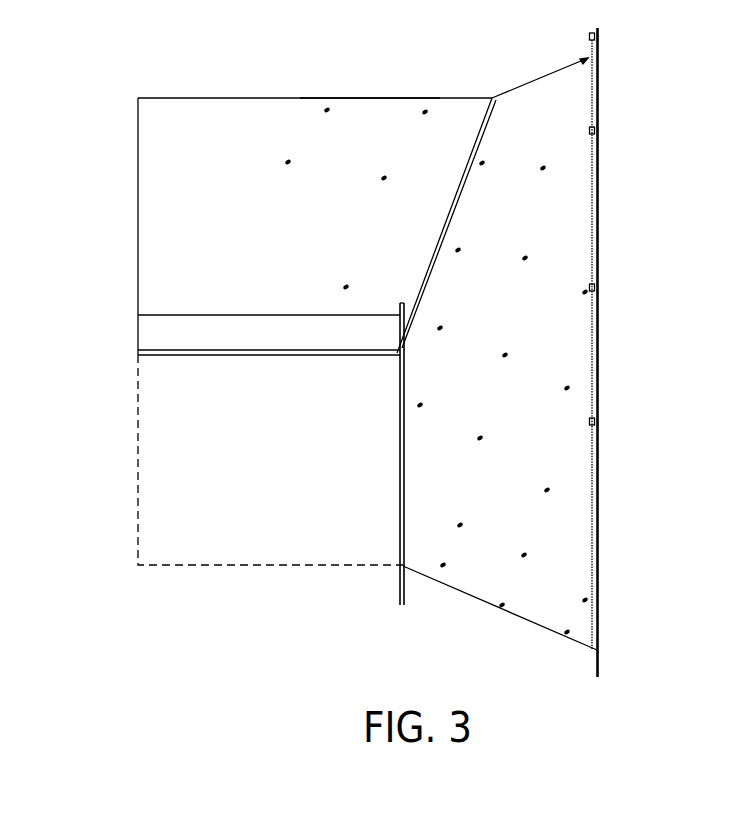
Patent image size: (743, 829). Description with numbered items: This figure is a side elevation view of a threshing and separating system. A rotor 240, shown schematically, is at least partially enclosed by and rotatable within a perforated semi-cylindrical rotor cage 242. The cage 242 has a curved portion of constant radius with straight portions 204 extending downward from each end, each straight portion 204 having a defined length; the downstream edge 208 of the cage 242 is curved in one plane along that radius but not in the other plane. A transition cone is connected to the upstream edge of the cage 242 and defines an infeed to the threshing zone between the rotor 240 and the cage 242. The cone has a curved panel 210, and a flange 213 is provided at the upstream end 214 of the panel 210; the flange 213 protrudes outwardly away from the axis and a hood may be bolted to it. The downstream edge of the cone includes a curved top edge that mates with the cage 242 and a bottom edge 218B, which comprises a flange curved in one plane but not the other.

The downstream edge 208 is at (138, 164).
The straight portion 204 is at (155, 335).
The perforated semi-cylindrical rotor cage 242 is at (367, 116).
The rotor 240 is at (137, 484).
The bottom edge 218B is at (401, 464).
The curved panel 210 is at (540, 96).
The flange 213 is at (594, 38).
The upstream end 214 is at (590, 416).